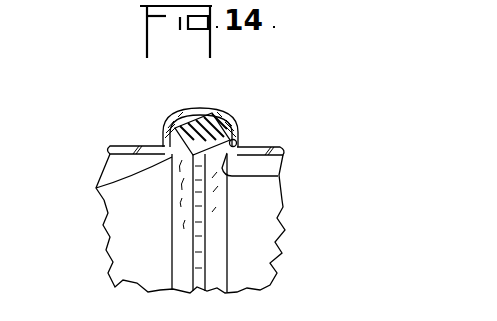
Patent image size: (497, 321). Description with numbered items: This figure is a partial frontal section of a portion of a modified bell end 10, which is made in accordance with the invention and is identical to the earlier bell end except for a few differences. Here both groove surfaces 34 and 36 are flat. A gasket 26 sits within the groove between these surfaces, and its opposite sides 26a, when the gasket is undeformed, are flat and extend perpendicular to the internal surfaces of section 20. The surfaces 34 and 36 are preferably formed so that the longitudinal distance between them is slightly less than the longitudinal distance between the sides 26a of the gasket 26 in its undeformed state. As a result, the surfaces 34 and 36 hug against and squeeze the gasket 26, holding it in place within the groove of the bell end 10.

The bell end 10 is at (190, 106).
The surface 36 is at (167, 125).
The gasket 26 is at (226, 118).
The surface 34 is at (236, 142).
The section 20 is at (108, 146).
The opposite sides of gasket 26a is at (97, 189).